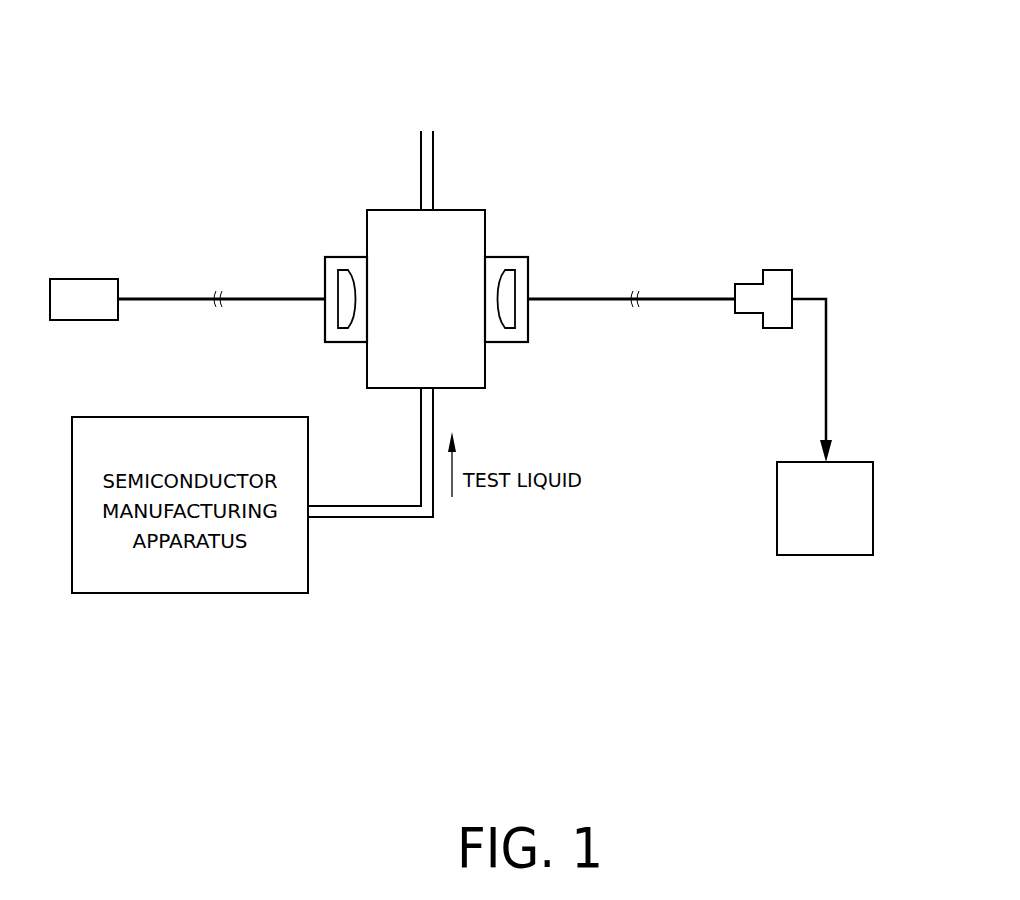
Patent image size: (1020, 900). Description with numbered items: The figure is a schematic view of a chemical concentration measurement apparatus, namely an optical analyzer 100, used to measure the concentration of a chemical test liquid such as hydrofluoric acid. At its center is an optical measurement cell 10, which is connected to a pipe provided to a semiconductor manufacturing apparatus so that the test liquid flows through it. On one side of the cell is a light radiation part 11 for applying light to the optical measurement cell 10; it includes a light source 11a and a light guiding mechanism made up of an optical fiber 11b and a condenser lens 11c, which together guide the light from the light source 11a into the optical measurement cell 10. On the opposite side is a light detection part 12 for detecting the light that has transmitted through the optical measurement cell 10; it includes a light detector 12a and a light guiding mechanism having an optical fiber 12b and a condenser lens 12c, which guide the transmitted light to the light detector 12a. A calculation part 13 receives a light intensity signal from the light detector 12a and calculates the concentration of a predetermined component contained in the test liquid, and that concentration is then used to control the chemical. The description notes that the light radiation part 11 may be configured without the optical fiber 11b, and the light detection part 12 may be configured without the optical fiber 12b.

The optical analyzer 100 is at (295, 98).
The optical measurement cell 10 is at (390, 210).
The light radiation part 11 is at (298, 198).
The light source 11a is at (102, 278).
The optical fiber 11b is at (243, 297).
The condenser lens 11c is at (340, 256).
The light detection part 12 is at (727, 198).
The light detector 12a is at (750, 280).
The optical fiber 12b is at (610, 297).
The condenser lens 12c is at (523, 252).
The calculation part 13 is at (777, 508).